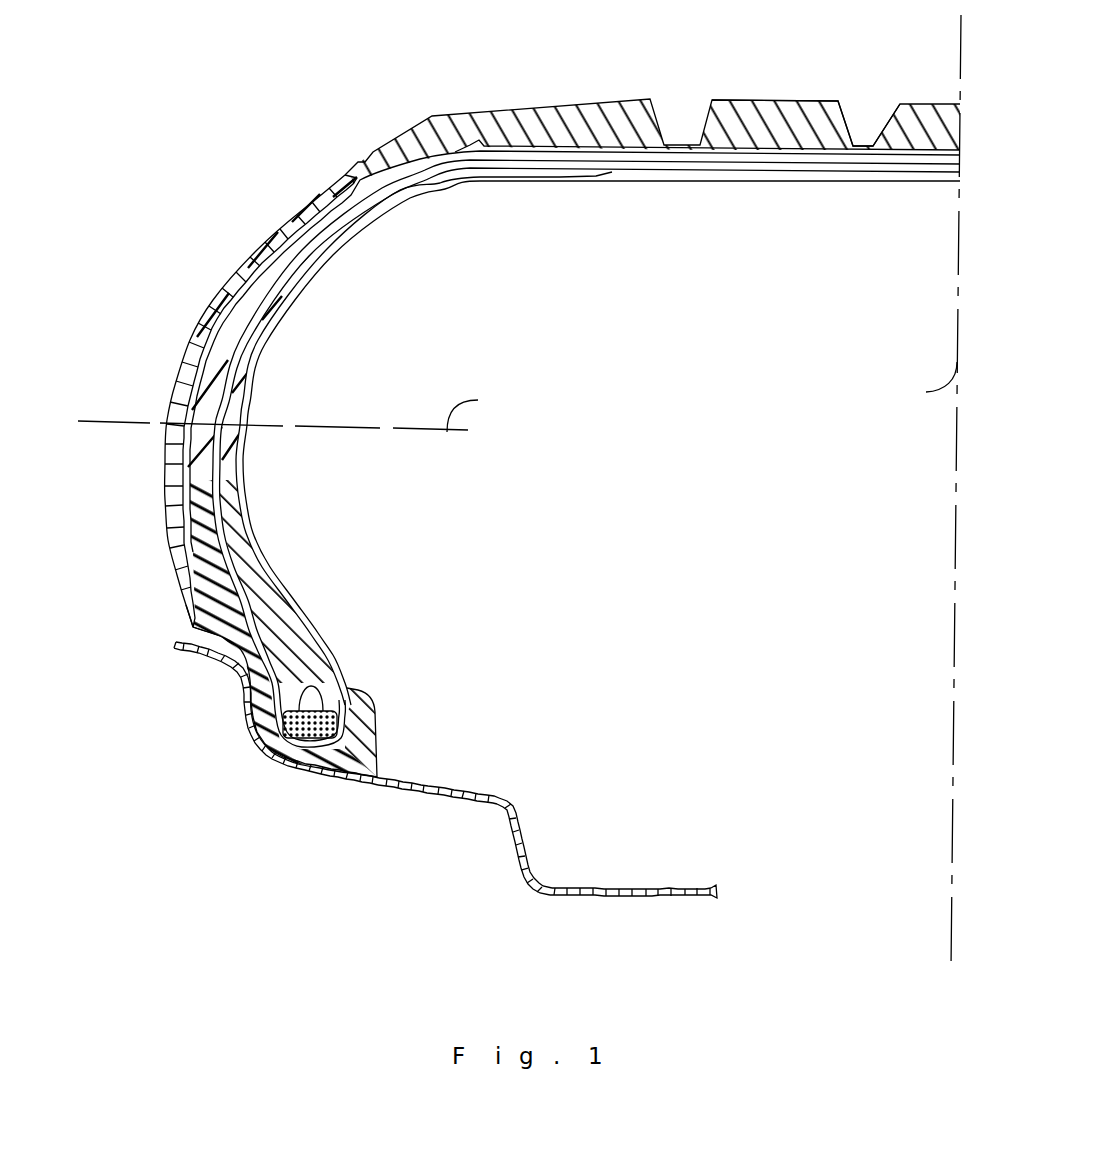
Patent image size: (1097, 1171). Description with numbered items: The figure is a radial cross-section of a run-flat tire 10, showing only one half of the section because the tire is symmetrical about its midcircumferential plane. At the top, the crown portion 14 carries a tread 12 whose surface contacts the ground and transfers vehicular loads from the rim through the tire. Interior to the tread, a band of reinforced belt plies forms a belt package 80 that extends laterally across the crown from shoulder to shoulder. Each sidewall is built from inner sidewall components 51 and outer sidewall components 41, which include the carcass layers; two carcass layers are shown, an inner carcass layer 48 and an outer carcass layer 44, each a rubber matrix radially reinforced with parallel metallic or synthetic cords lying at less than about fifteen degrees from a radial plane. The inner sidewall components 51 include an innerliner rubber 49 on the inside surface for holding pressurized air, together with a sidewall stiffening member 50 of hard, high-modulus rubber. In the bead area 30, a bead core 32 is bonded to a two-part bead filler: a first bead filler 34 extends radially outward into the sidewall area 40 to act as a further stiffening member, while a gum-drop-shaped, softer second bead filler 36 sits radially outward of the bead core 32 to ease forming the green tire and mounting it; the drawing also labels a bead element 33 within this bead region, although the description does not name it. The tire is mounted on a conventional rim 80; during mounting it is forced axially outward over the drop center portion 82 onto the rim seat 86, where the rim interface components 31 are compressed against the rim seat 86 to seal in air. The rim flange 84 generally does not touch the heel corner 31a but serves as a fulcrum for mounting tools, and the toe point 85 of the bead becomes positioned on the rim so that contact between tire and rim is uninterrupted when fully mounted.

The tire 10 is at (255, 175).
The tread 12 is at (735, 112).
The crown portion 14 is at (596, 96).
The bead area 30 is at (277, 684).
The rim interface components 31 is at (264, 718).
The heel corner 31a is at (190, 626).
The bead core 32 is at (327, 710).
The bead core 33 is at (320, 748).
The first bead filler 34 is at (306, 656).
The second bead filler 36 is at (311, 690).
The sidewall area 40 is at (208, 318).
The outer sidewall components 41 is at (160, 405).
The outer carcass layer 44 is at (192, 458).
The inner carcass layer 48 is at (245, 472).
The innerliner rubber 49 is at (257, 505).
The sidewall stiffening member 50 is at (264, 373).
The inner sidewall components 51 is at (286, 333).
The belt package 80 is at (553, 826).
The drop center portion 82 is at (525, 818).
The rim flange 84 is at (200, 653).
The toe point 85 is at (380, 774).
The rim seat 86 is at (343, 783).